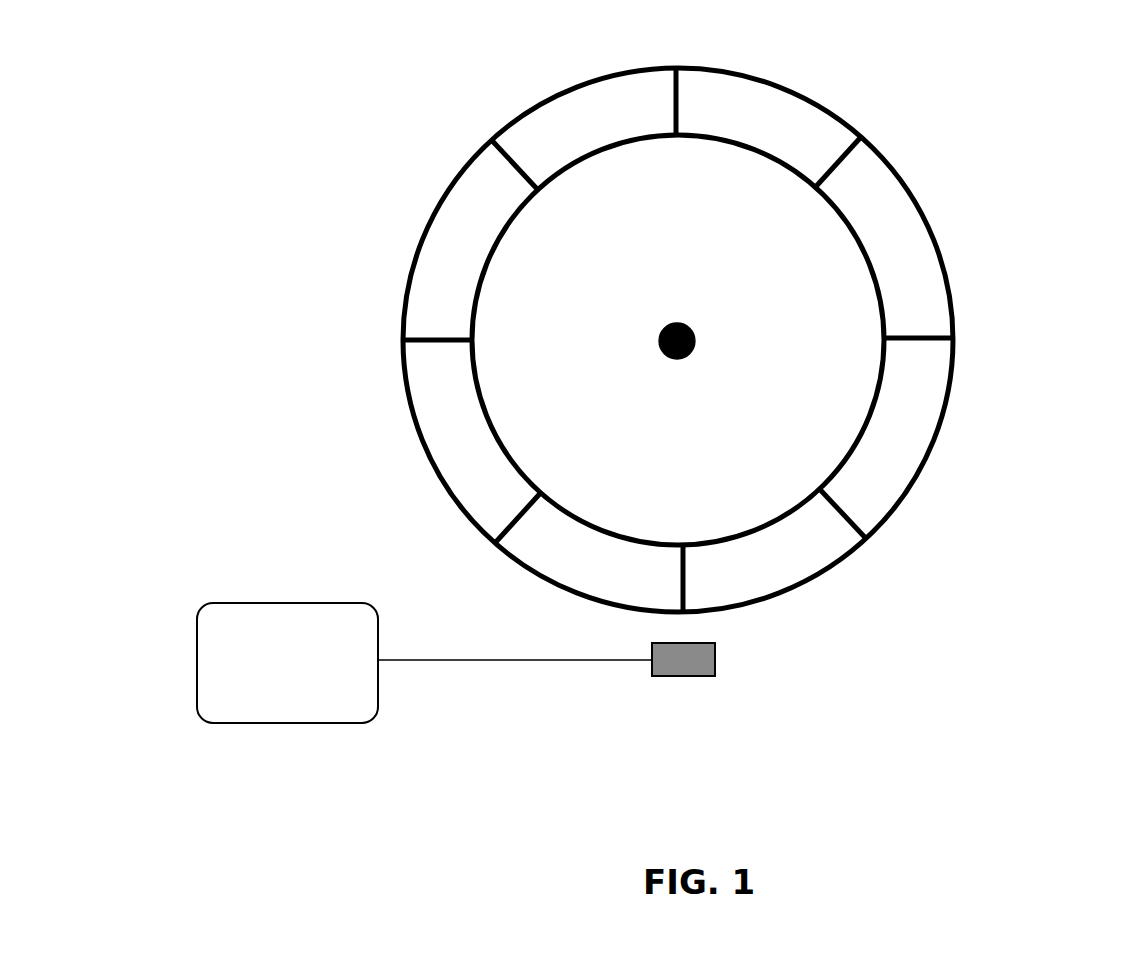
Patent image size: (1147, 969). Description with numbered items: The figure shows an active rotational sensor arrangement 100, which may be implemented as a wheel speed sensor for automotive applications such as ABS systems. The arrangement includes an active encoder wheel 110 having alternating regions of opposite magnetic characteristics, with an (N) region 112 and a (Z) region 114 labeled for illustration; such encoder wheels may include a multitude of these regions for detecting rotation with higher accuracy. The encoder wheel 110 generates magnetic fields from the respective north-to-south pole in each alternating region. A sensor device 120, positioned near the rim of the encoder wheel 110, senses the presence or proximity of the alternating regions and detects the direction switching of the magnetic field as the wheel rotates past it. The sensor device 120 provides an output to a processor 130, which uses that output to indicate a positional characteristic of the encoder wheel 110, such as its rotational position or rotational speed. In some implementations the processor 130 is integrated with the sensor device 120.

The active rotational sensor arrangement 100 is at (1010, 88).
The active encoder wheel 110 is at (761, 403).
The (N) region 112 is at (796, 89).
The (Z) region 114 is at (925, 216).
The sensor device 120 is at (678, 665).
The processor 130 is at (346, 603).